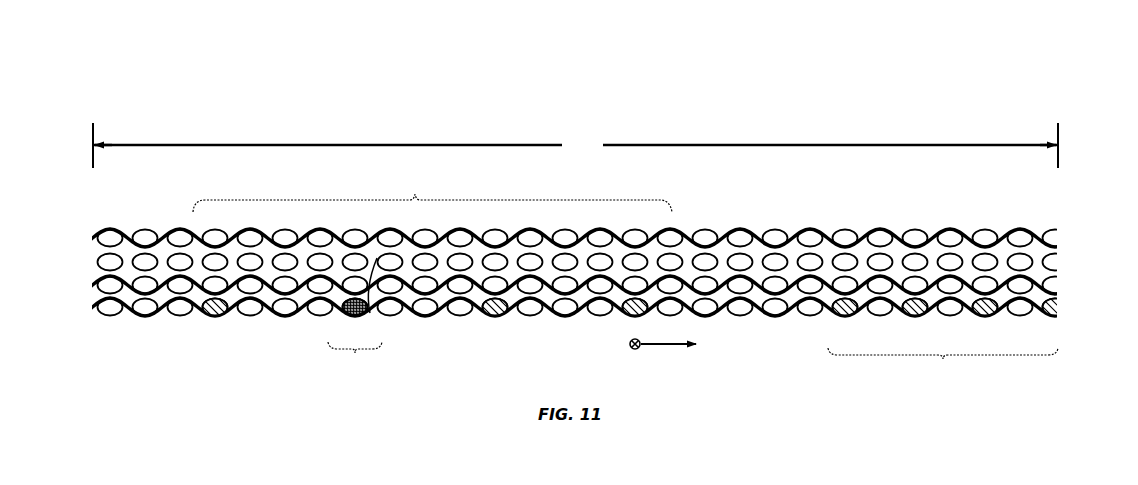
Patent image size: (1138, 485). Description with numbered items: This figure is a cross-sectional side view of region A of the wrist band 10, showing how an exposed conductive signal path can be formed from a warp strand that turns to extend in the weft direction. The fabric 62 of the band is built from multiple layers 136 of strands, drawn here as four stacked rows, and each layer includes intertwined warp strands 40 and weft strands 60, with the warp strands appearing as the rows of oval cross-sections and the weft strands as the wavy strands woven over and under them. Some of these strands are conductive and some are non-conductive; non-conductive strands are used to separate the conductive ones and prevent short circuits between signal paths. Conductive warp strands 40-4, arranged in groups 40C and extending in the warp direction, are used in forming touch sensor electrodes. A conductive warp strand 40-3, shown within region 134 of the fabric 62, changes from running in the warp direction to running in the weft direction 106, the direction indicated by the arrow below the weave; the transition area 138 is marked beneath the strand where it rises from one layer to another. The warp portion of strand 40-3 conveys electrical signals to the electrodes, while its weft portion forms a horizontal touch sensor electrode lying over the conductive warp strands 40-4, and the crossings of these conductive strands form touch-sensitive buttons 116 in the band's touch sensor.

The wrist band 10 is at (268, 68).
The fabric 62 is at (853, 113).
The region 134 is at (432, 192).
The layers 136 is at (87, 262).
The warp strand 40-3 is at (760, 257).
The warp strands 40 is at (843, 238).
The weft strands 60 is at (895, 232).
The touch-sensitive buttons 116 is at (988, 215).
The transition region 138 is at (355, 359).
The weft direction 106 is at (663, 349).
The warp strands 40-4 is at (847, 311).
The groups 40C is at (943, 365).